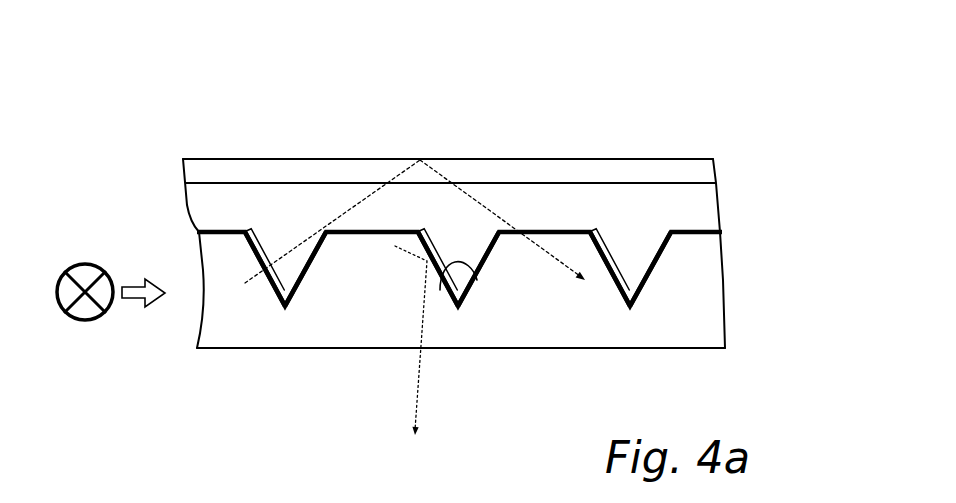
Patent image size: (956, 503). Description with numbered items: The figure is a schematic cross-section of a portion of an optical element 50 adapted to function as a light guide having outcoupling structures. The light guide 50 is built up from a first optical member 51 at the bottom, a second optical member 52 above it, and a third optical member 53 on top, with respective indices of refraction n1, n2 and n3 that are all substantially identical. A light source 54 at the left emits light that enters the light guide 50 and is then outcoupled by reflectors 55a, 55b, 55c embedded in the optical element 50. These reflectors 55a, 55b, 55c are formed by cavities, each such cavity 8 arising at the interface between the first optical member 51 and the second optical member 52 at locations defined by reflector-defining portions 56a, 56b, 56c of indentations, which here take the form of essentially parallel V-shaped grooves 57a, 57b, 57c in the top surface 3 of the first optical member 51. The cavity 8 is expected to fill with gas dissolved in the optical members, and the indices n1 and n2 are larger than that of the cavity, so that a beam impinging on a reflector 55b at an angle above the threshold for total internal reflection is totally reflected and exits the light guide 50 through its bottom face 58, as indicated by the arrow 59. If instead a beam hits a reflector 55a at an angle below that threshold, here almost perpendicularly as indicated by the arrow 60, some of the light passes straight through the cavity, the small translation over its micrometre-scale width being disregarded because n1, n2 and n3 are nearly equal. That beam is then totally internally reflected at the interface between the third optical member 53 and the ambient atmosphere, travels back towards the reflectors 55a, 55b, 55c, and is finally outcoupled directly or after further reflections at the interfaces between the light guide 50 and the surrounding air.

The top surface 3 is at (212, 230).
The cavity 8 is at (477, 280).
The optical element 50 is at (711, 107).
The first optical member 51 is at (716, 270).
The second optical member 52 is at (717, 192).
The third optical member 53 is at (656, 170).
The light source 54 is at (87, 320).
The reflector 55a is at (262, 230).
The reflector 55b is at (433, 230).
The reflector 55c is at (598, 230).
The reflector-defining portion 56a is at (277, 284).
The reflector-defining portion 56b is at (442, 289).
The reflector-defining portion 56c is at (612, 283).
The groove 57a is at (296, 241).
The groove 57b is at (468, 257).
The groove 57c is at (626, 258).
The bottom face 58 is at (708, 349).
The arrow 59 is at (418, 377).
The arrow 60 is at (550, 257).
The first index of refraction n1 is at (710, 315).
The second index of refraction n2 is at (712, 207).
The third index of refraction n3 is at (717, 167).